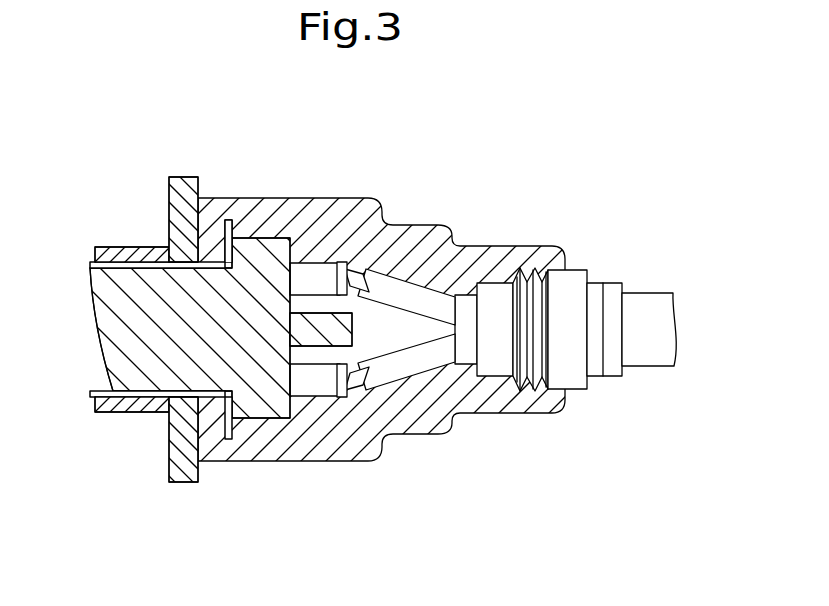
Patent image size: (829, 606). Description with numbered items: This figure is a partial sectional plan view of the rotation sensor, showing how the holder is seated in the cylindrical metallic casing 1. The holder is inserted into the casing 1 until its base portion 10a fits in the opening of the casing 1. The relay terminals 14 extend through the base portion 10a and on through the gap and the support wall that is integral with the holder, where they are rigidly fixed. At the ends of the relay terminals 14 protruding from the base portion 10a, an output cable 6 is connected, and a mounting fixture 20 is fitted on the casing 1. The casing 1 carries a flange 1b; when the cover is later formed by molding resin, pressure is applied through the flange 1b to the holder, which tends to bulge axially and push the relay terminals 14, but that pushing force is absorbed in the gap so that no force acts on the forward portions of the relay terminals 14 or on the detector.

The casing 1 is at (113, 262).
The flange 1b is at (232, 221).
The mounting fixture 20 is at (183, 200).
The relay terminals 14 is at (315, 277).
The base portion 10a is at (165, 413).
The output cable 6 is at (645, 337).